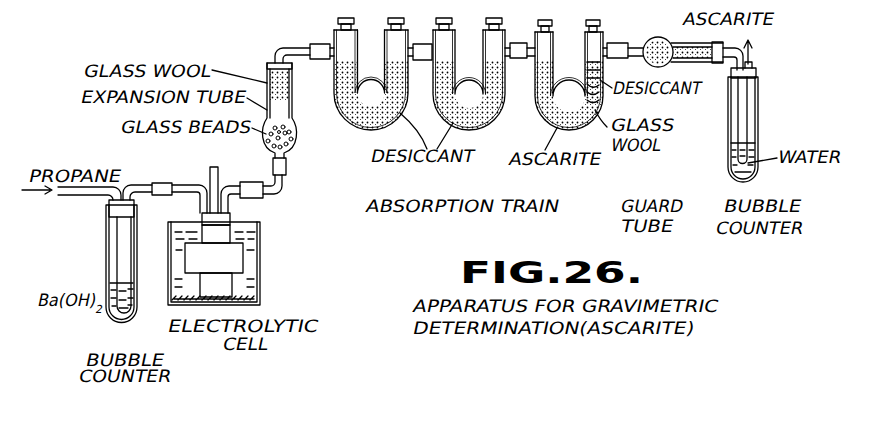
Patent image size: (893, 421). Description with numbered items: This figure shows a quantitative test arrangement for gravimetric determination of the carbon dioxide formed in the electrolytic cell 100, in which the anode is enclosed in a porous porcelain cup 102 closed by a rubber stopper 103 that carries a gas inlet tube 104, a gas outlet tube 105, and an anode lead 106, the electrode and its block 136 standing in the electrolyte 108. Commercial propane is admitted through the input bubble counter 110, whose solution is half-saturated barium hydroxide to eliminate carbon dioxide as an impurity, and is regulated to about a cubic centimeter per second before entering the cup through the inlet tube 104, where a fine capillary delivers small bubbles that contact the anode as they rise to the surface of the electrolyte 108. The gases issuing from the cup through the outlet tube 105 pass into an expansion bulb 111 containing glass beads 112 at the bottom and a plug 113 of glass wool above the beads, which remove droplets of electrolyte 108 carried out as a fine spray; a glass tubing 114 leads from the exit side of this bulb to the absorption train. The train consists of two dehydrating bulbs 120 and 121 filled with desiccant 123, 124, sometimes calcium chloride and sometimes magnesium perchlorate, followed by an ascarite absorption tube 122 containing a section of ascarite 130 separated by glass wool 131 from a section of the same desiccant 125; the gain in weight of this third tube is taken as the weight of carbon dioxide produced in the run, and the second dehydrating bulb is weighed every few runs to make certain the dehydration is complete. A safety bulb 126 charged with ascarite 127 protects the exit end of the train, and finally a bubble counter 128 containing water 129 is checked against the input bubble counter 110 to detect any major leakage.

The electrolytic cell 100 is at (268, 262).
The porous porcelain cup 102 is at (220, 285).
The rubber stopper 103 is at (232, 220).
The gas inlet tube 104 is at (201, 184).
The gas outlet tube 105 is at (238, 198).
The anode lead 106 is at (220, 159).
The electrolyte 108 is at (261, 236).
The bubble counter 110 is at (117, 325).
The expansion bulb 111 is at (292, 103).
The glass beads 112 is at (295, 135).
The plug of glass wool 113 is at (285, 77).
The glass tubing 114 is at (289, 47).
The dehydrating bulb 120 is at (380, 128).
The dehydrating bulb 121 is at (470, 125).
The ascarite absorption tube 122 is at (561, 131).
The desiccant 123 is at (397, 78).
The desiccant 124 is at (446, 78).
The desiccant 125 is at (603, 68).
The safety bulb 126 is at (662, 37).
The ascarite 127 is at (674, 64).
The bubble counter 128 is at (728, 170).
The water 129 is at (755, 153).
The ascarite 130 is at (536, 88).
The glass wool 131 is at (600, 100).
The main electrode block 136 is at (232, 265).